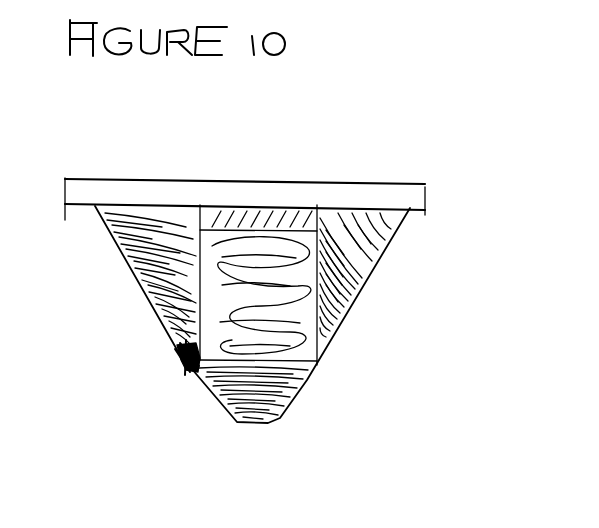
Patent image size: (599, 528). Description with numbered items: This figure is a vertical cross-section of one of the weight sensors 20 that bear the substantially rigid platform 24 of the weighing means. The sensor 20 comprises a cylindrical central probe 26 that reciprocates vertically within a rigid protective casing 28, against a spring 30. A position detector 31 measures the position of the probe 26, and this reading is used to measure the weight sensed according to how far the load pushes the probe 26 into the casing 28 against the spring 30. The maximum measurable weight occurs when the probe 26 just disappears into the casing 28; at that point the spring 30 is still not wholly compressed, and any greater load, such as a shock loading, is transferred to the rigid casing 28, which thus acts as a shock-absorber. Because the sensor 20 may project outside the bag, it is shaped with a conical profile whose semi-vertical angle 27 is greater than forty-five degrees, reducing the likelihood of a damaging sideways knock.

The weight sensor 20 is at (400, 280).
The platform 24 is at (149, 196).
The central probe 26 is at (230, 407).
The semi-vertical angle 27 is at (180, 376).
The protective casing 28 is at (167, 285).
The spring 30 is at (250, 278).
The position detector 31 is at (400, 338).